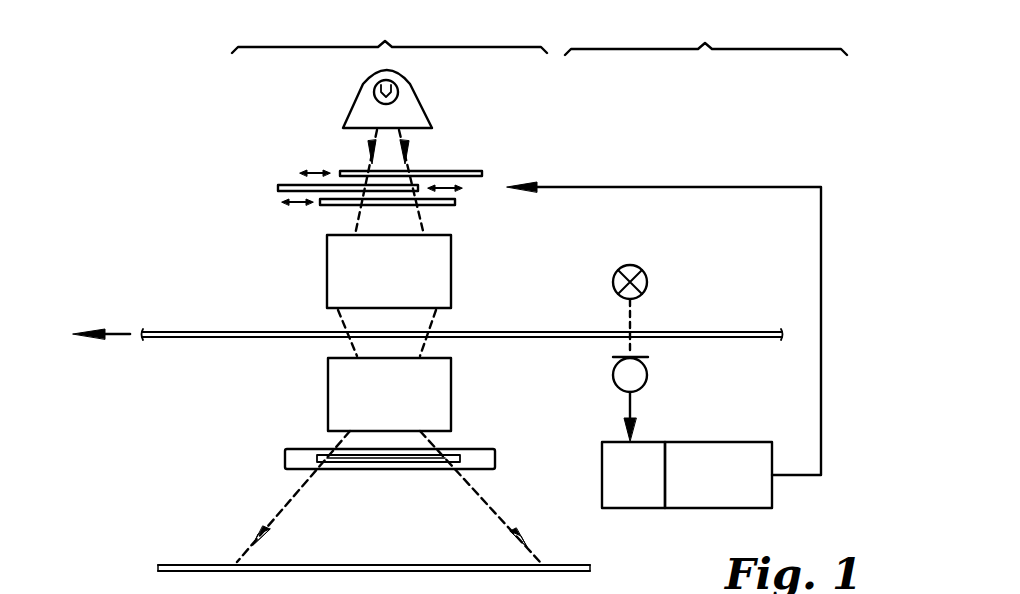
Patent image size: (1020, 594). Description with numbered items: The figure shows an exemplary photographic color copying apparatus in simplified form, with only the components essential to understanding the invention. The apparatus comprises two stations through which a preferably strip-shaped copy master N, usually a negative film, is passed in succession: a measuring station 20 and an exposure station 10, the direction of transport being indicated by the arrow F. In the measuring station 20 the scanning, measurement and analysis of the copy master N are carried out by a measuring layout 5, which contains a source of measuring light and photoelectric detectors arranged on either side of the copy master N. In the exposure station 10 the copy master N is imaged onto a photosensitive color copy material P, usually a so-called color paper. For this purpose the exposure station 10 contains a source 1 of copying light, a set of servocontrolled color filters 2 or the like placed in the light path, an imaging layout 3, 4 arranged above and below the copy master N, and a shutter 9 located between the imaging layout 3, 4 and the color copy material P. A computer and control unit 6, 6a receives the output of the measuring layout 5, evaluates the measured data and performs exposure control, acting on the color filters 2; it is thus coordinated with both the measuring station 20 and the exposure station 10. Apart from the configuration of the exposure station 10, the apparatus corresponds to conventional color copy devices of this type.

The source of copying light 1 is at (398, 92).
The set of servocontrolled color filters 2 is at (260, 160).
The imaging layout 3 is at (340, 269).
The imaging layout 4 is at (342, 391).
The measuring layout 5 is at (662, 390).
The computer and control unit 6 is at (618, 467).
The computer and control unit 6a is at (712, 458).
The shutter 9 is at (290, 456).
The exposure station 10 is at (389, 31).
The measuring station 20 is at (706, 33).
The copy master N is at (205, 331).
The direction of transport F is at (101, 319).
The photosensitive color copy material P is at (192, 566).